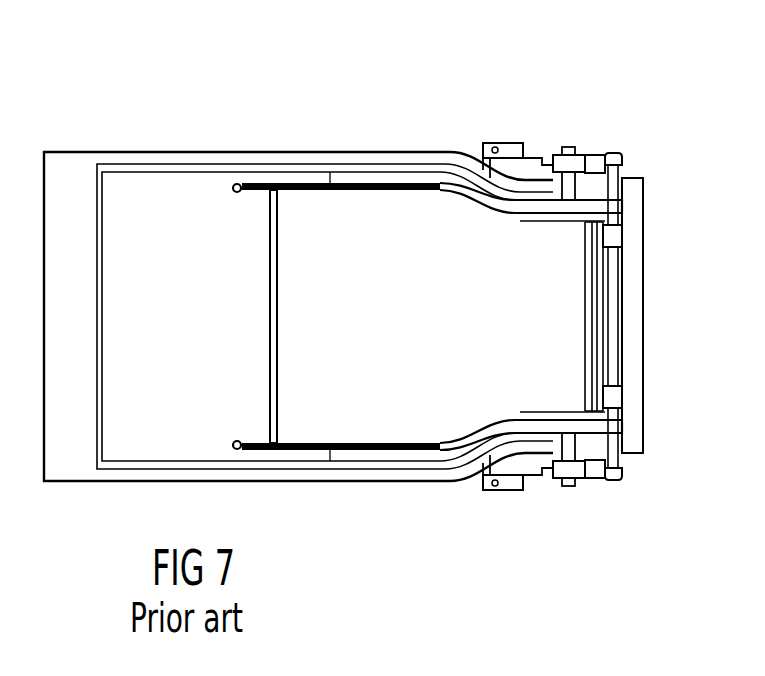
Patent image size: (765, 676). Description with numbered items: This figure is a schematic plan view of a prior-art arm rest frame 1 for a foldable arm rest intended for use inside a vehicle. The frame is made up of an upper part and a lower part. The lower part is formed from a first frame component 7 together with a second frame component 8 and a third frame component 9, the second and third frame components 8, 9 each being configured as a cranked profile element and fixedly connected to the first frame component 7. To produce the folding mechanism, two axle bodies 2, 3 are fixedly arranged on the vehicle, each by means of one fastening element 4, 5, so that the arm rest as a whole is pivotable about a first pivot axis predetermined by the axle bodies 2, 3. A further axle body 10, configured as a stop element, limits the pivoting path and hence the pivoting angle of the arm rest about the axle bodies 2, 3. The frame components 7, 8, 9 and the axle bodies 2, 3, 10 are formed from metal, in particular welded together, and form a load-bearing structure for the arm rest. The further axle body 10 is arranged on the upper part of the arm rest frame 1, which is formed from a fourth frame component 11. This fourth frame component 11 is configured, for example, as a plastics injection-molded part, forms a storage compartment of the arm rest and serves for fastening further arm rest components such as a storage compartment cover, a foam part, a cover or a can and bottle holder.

The arm rest frame 1 is at (88, 108).
The axle body 2 is at (567, 147).
The axle body 3 is at (568, 488).
The fastening element 4 is at (510, 143).
The fastening element 5 is at (500, 492).
The first frame component 7 is at (217, 186).
The second frame component 8 is at (398, 178).
The third frame component 9 is at (419, 456).
The further axle body 10 is at (612, 303).
The fourth frame component 11 is at (167, 155).